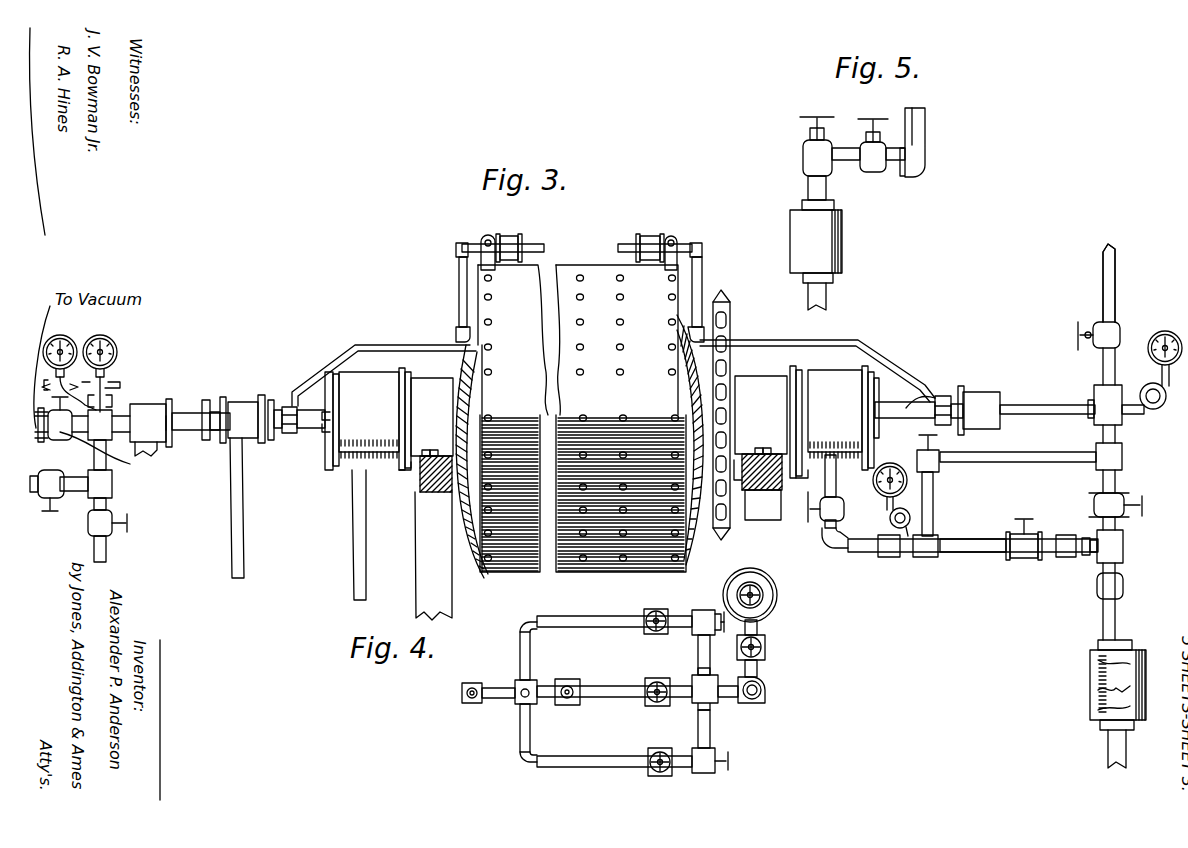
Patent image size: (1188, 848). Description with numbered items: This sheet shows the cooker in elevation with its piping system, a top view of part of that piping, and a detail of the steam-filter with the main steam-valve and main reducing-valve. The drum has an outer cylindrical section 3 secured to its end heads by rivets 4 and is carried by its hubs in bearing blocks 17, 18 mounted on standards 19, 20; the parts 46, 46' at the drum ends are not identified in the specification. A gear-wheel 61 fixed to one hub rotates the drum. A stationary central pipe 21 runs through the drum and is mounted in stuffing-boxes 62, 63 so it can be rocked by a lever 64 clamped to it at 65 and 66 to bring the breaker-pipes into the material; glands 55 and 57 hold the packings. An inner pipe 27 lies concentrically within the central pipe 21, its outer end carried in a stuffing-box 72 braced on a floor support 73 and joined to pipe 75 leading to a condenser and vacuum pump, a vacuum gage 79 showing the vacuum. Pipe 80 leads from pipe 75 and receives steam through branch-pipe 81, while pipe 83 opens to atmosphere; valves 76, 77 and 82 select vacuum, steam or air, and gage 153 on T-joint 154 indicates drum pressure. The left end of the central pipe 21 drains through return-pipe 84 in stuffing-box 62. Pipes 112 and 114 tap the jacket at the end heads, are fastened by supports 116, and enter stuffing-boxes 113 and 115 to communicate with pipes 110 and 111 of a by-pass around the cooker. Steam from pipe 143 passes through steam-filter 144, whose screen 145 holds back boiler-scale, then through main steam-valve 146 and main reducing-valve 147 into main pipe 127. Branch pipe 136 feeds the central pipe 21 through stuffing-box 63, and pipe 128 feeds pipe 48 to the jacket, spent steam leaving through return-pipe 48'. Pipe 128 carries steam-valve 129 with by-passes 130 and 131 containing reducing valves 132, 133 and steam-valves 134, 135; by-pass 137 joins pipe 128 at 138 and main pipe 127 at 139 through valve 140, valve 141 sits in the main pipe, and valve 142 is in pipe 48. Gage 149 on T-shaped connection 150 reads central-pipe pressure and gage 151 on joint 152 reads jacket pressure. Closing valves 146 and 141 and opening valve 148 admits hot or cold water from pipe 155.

In FIG. 3, the outer cylindrical section 3 is at (592, 276).
In FIG. 3, the rivets 4 is at (484, 322).
In FIG. 3, the bearing block 17 is at (428, 390).
In FIG. 3, the bearing block 18 is at (760, 390).
In FIG. 3, the standard 19 is at (422, 530).
In FIG. 3, the standard 20 is at (762, 508).
In FIG. 3, the central pipe 21 is at (300, 428).
In FIG. 3, the inner pipe 27 is at (183, 413).
In FIG. 3, the head casing 46 is at (832, 412).
In FIG. 3, the head casing 46' is at (384, 400).
In FIG. 3, the pipe 48 is at (843, 501).
In FIG. 4, the pipe 48 is at (463, 693).
In FIG. 3, the drain- or return-pipe 48' is at (337, 535).
In FIG. 3, the gland 55 is at (860, 400).
In FIG. 3, the gland 57 is at (896, 400).
In FIG. 3, the gear-wheel 61 is at (730, 326).
In FIG. 3, the stuffing-box 62 is at (247, 402).
In FIG. 3, the stuffing-box 63 is at (988, 396).
In FIG. 3, the lever 64 is at (798, 340).
In FIG. 3, the clamp 65 is at (284, 406).
In FIG. 3, the clamp 66 is at (948, 396).
In FIG. 3, the stuffing-box 72 is at (152, 406).
In FIG. 3, the support 73 is at (160, 446).
In FIG. 3, the pipe 75 is at (108, 418).
In FIG. 3, the valve 76 is at (57, 440).
In FIG. 3, the valve 77 is at (50, 512).
In FIG. 3, the vacuum gage 79 is at (66, 340).
In FIG. 3, the pipe 80 is at (91, 482).
In FIG. 3, the branch-pipe 81 is at (74, 492).
In FIG. 3, the valve 82 is at (128, 522).
In FIG. 3, the pipe 83 is at (107, 556).
In FIG. 3, the drain- or return-pipe 84 is at (246, 530).
In FIG. 3, the pipe 110 is at (628, 244).
In FIG. 3, the pipe 111 is at (530, 244).
In FIG. 3, the pipe 112 is at (700, 290).
In FIG. 3, the stuffing-box 113 is at (650, 238).
In FIG. 3, the pipe 114 is at (456, 306).
In FIG. 3, the stuffing-box 115 is at (508, 240).
In FIG. 3, the supports 116 is at (486, 240).
In FIG. 3, the main pipe 127 is at (1118, 430).
In FIG. 4, the main pipe 127 is at (766, 690).
In FIG. 5, the main pipe 127 is at (926, 132).
In FIG. 3, the pipe 128 is at (872, 552).
In FIG. 4, the pipe 128 is at (608, 686).
In FIG. 4, the steam-valve 129 is at (664, 672).
In FIG. 4, the by-pass 130 is at (622, 627).
In FIG. 3, the by-pass 131 is at (990, 552).
In FIG. 4, the by-pass 131 is at (620, 756).
In FIG. 4, the reducing valve 132 is at (655, 610).
In FIG. 3, the reducing valve 133 is at (1024, 560).
In FIG. 4, the reducing valve 133 is at (660, 776).
In FIG. 4, the steam-valve 134 is at (720, 614).
In FIG. 3, the steam-valve 135 is at (1086, 557).
In FIG. 4, the steam-valve 135 is at (727, 768).
In FIG. 3, the branch pipe 136 is at (1050, 405).
In FIG. 3, the by-pass 137 is at (1016, 462).
In FIG. 3, the connection 138 is at (930, 557).
In FIG. 4, the connection 138 is at (570, 705).
In FIG. 3, the connection 139 is at (1100, 468).
In FIG. 3, the steam-valve 140 is at (936, 470).
In FIG. 3, the steam-valve 141 is at (1120, 496).
In FIG. 3, the steam-valve 142 is at (844, 512).
In FIG. 3, the pipe 143 is at (1108, 745).
In FIG. 5, the pipe 143 is at (828, 298).
In FIG. 3, the steam-filter 144 is at (1092, 672).
In FIG. 4, the steam-filter 144 is at (775, 590).
In FIG. 5, the steam-filter 144 is at (840, 246).
In FIG. 3, the screen 145 is at (1092, 700).
In FIG. 4, the main steam-valve 146 is at (762, 602).
In FIG. 5, the main steam-valve 146 is at (808, 146).
In FIG. 4, the main reducing-valve 147 is at (766, 646).
In FIG. 5, the main reducing-valve 147 is at (876, 164).
In FIG. 3, the valve 148 is at (1098, 324).
In FIG. 3, the gage 149 is at (1158, 332).
In FIG. 3, the T-shaped connection 150 is at (1100, 424).
In FIG. 3, the gage 151 is at (892, 464).
In FIG. 3, the joint 152 is at (892, 557).
In FIG. 4, the joint 152 is at (521, 684).
In FIG. 3, the gage 153 is at (112, 352).
In FIG. 3, the T-joint 154 is at (118, 400).
In FIG. 3, the pipe 155 is at (1102, 290).